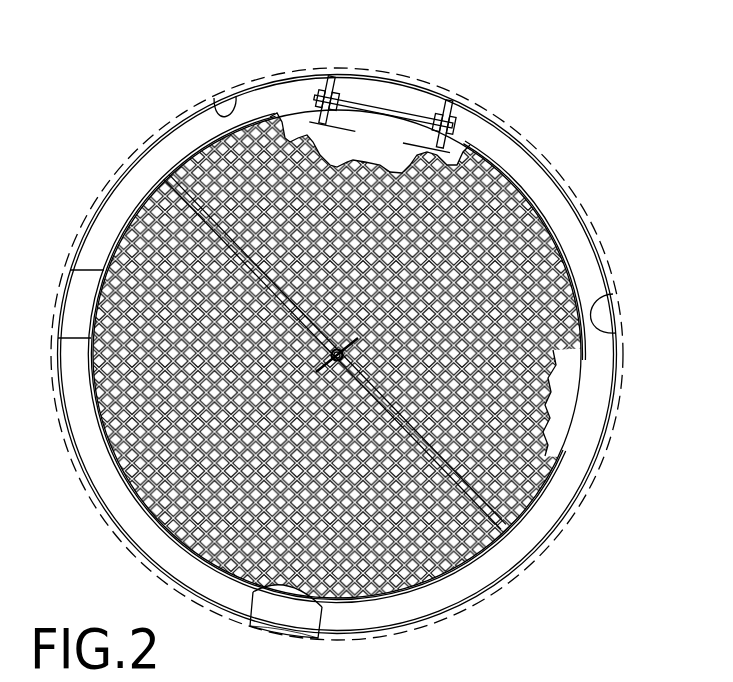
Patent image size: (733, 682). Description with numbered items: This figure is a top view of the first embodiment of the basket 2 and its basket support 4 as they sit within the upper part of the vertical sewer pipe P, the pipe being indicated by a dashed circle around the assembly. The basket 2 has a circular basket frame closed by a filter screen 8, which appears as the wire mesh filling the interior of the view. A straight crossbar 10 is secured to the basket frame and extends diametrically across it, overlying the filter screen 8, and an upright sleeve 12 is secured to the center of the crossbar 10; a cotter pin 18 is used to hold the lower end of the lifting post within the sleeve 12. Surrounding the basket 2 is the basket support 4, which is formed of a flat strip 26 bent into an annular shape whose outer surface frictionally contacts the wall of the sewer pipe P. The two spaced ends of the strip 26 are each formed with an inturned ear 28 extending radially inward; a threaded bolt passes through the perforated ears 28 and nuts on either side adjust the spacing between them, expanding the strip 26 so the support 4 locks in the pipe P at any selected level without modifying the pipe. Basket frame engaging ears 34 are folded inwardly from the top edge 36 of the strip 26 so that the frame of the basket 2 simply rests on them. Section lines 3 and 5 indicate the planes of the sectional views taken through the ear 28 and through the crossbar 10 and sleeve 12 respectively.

The basket 2 is at (116, 467).
The basket support 4 is at (120, 543).
The filter screen 8 is at (540, 262).
The crossbar 10 is at (479, 493).
The sleeve 12 is at (331, 350).
The cotter pin 18 is at (343, 350).
The flat strip 26 is at (214, 104).
The inturned ear 28 is at (373, 78).
The basket frame engaging ear 34 is at (97, 268).
The top edge 36 is at (327, 612).
The section line 3- 3 is at (316, 98).
The section line 5- 5 is at (150, 133).
The sewer pipe P is at (562, 175).